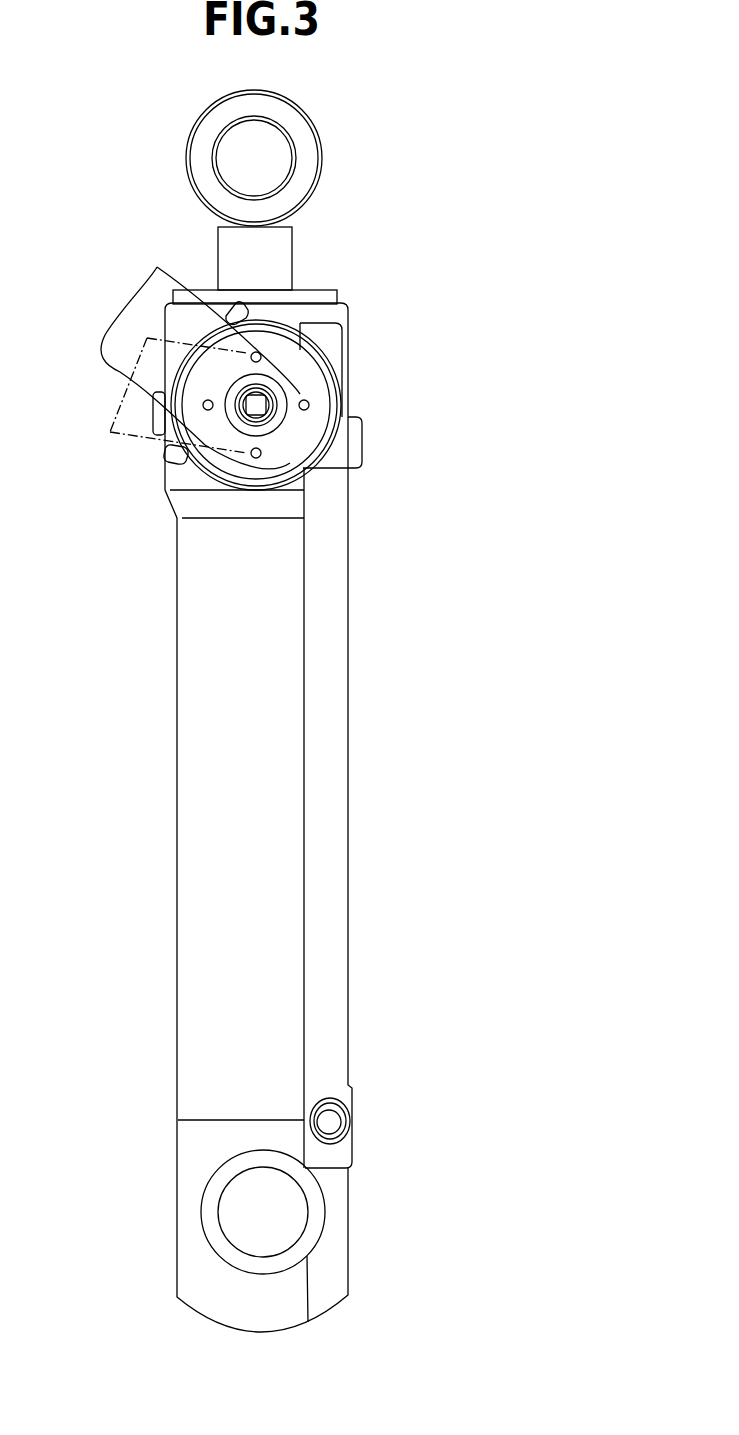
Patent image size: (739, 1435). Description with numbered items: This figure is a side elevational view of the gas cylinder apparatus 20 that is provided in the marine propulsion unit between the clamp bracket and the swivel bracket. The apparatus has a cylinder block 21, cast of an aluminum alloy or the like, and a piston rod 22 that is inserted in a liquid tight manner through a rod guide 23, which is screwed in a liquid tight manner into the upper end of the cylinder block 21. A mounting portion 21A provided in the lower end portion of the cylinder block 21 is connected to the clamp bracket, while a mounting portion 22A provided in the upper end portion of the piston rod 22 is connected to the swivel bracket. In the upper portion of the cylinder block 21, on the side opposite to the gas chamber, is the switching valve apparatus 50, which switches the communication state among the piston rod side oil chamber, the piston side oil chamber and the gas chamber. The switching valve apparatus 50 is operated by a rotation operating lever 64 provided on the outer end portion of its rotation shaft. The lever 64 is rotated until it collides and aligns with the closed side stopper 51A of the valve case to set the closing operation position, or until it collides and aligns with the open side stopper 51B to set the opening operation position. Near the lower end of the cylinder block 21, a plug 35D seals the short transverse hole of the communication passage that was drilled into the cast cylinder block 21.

The gas cylinder apparatus 20 is at (450, 331).
The cylinder block 21 is at (188, 755).
The mounting portion 21A is at (225, 1248).
The piston rod 22 is at (280, 235).
The mounting portion 22A is at (298, 128).
The rod guide 23 is at (338, 297).
The switching valve apparatus 50 is at (316, 372).
The closed side stopper 51A is at (250, 306).
The open side stopper 51B is at (163, 453).
The rotation operating lever 64 is at (117, 365).
The plug 35D is at (352, 1130).